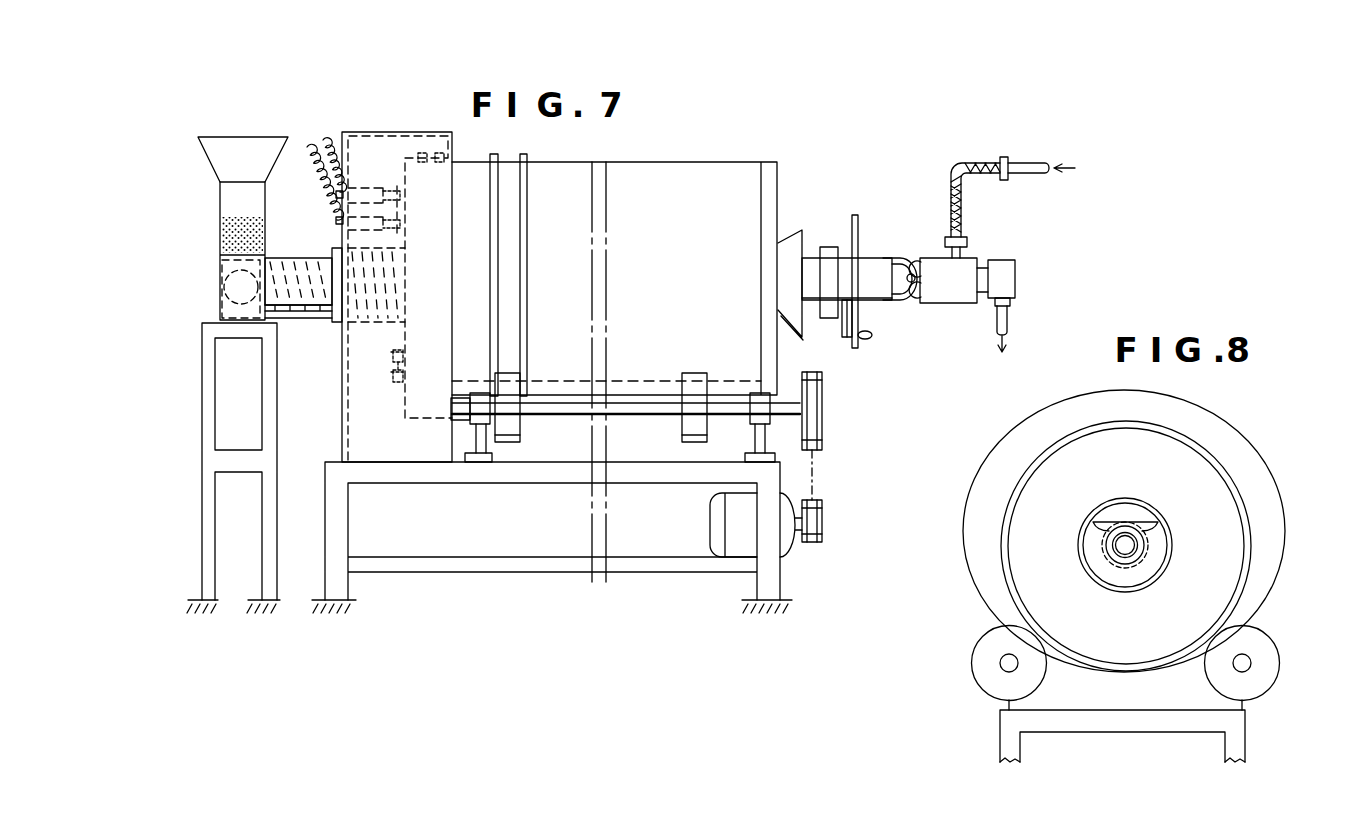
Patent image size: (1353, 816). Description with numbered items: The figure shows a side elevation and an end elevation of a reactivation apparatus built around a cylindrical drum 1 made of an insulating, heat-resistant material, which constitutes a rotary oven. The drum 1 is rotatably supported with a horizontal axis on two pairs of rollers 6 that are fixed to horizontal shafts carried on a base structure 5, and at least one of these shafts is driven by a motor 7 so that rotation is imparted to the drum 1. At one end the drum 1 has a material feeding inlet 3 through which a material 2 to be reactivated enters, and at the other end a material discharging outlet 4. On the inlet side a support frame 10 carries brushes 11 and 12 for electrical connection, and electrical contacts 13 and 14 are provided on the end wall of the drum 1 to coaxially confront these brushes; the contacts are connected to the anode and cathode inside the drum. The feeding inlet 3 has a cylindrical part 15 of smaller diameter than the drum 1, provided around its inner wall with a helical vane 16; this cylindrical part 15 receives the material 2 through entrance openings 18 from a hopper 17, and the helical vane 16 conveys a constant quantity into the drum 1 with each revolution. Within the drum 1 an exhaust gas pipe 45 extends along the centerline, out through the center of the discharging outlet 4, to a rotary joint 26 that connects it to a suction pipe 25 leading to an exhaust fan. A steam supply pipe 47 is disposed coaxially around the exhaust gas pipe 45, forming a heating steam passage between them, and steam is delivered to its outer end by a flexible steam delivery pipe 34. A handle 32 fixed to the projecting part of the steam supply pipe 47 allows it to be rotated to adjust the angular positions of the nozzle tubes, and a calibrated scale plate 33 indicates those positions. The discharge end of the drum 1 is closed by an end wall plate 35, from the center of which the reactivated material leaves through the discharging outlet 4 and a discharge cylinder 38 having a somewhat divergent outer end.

In FIG. 7, the cylindrical drum 1 is at (686, 173).
In FIG. 8, the cylindrical drum 1 is at (1193, 477).
In FIG. 7, the material to be reactivated 2 is at (218, 237).
In FIG. 7, the material feeding inlet 3 is at (390, 290).
In FIG. 7, the material discharging outlet 4 is at (803, 247).
In FIG. 8, the material discharging outlet 4 is at (1120, 510).
In FIG. 7, the base structure 5 is at (325, 543).
In FIG. 8, the base structure 5 is at (1000, 726).
In FIG. 7, the rollers 6 is at (511, 424).
In FIG. 8, the rollers 6 is at (971, 670).
In FIG. 7, the motor 7 is at (735, 518).
In FIG. 7, the support frame 10 is at (342, 423).
In FIG. 7, the brush 11 is at (341, 181).
In FIG. 7, the brush 12 is at (382, 233).
In FIG. 7, the electrical contact 13 is at (393, 188).
In FIG. 7, the electrical contact 14 is at (397, 213).
In FIG. 7, the cylindrical part 15 is at (316, 318).
In FIG. 7, the helical vane 16 is at (299, 313).
In FIG. 7, the hopper 17 is at (245, 137).
In FIG. 7, the entrance openings 18 is at (222, 303).
In FIG. 7, the suction pipe 25 is at (1008, 320).
In FIG. 7, the rotary joint 26 is at (1012, 281).
In FIG. 7, the handle 32 is at (869, 339).
In FIG. 7, the calibrated scale plate 33 is at (856, 215).
In FIG. 7, the flexible steam delivery pipe 34 is at (957, 163).
In FIG. 8, the end wall plate 35 is at (1043, 596).
In FIG. 7, the discharge cylinder 38 is at (791, 252).
In FIG. 8, the discharge cylinder 38 is at (1154, 565).
In FIG. 7, the exhaust gas pipe 45 is at (903, 270).
In FIG. 8, the exhaust gas pipe 45 is at (1108, 546).
In FIG. 7, the steam supply pipe 47 is at (950, 304).
In FIG. 8, the steam supply pipe 47 is at (1146, 542).